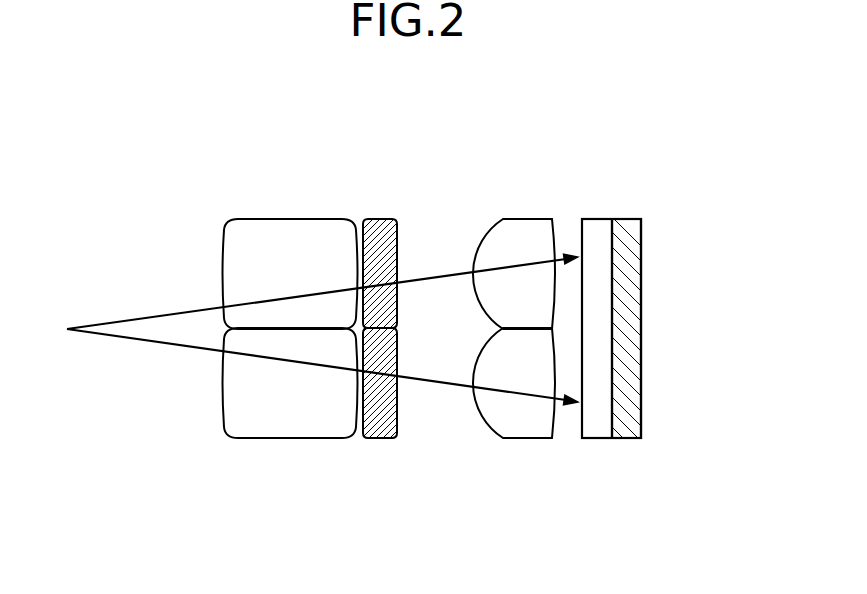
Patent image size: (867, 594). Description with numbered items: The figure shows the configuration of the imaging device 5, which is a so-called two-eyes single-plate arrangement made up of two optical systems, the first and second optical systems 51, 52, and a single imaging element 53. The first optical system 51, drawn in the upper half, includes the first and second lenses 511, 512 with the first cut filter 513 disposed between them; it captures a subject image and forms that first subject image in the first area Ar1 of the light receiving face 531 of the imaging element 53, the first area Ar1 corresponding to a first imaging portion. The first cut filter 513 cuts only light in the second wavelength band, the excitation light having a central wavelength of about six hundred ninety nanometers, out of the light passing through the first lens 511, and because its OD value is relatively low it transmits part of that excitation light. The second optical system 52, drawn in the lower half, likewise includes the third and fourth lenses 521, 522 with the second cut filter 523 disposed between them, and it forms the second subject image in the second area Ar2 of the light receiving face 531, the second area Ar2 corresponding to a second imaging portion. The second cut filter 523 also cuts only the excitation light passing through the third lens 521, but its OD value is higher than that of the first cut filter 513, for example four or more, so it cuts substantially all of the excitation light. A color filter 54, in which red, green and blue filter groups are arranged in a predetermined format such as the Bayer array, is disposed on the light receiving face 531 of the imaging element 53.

The imaging device 5 is at (661, 141).
The first optical system 51 is at (557, 153).
The first lens 511 is at (288, 218).
The second lens 512 is at (523, 218).
The first cut filter 513 is at (378, 218).
The second optical system 52 is at (557, 504).
The third lens 521 is at (288, 439).
The fourth lens 522 is at (523, 439).
The second cut filter 523 is at (378, 439).
The imaging element 53 is at (637, 277).
The light receiving face 531 is at (612, 418).
The color filter 54 is at (601, 221).
The first area Ar1 is at (603, 330).
The second area Ar2 is at (603, 330).